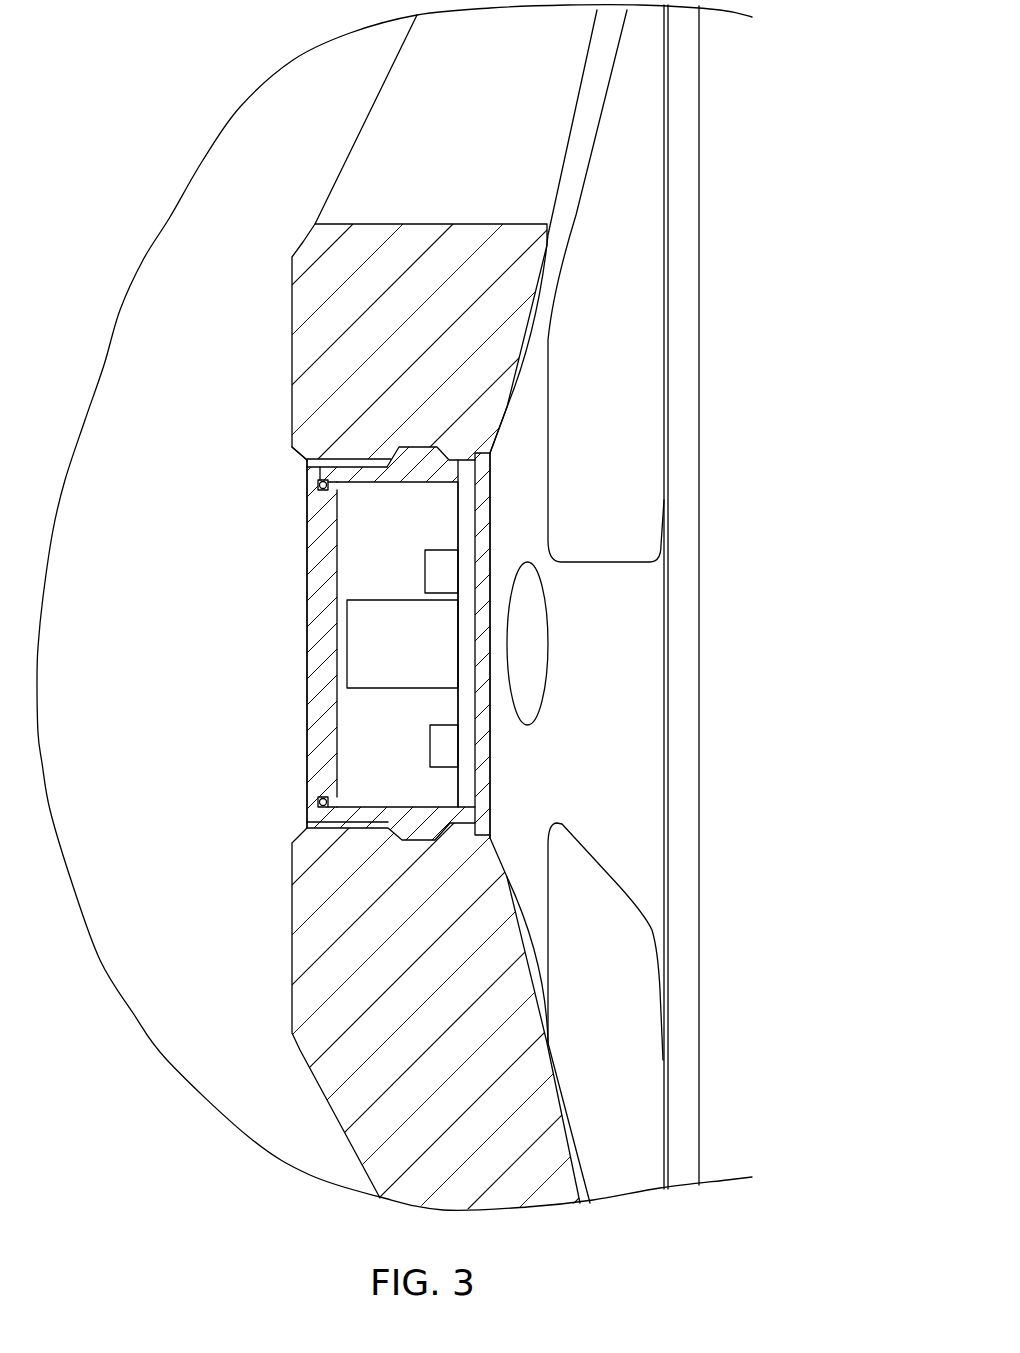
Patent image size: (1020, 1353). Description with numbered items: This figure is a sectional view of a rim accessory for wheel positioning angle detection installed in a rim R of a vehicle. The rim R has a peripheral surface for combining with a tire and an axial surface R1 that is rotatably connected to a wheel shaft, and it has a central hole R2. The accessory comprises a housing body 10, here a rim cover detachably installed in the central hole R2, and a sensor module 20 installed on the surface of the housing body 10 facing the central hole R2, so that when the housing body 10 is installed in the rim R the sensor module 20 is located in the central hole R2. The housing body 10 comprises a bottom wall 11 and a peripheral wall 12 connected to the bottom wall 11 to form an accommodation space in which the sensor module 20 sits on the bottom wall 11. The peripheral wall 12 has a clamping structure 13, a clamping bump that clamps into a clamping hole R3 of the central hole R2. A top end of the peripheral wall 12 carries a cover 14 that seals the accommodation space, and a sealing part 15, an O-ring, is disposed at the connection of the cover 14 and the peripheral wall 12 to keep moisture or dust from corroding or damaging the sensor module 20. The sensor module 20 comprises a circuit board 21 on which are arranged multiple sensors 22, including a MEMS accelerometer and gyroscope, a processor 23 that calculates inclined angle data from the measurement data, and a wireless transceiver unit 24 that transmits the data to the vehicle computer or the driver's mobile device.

The housing body 10 is at (782, 305).
The bottom wall 11 is at (485, 518).
The peripheral wall 12 is at (450, 463).
The clamping structure 13 is at (428, 452).
The cover 14 is at (330, 522).
The sealing part 15 is at (321, 486).
The sensor module 20 is at (775, 607).
The circuit board 21 is at (470, 556).
The sensors 22 is at (407, 655).
The processor 23 is at (443, 747).
The wireless transceiver unit 24 is at (437, 577).
The rim R is at (508, 1182).
The axial surface R1 is at (527, 866).
The central hole R2 is at (347, 814).
The clamping hole R3 is at (392, 458).